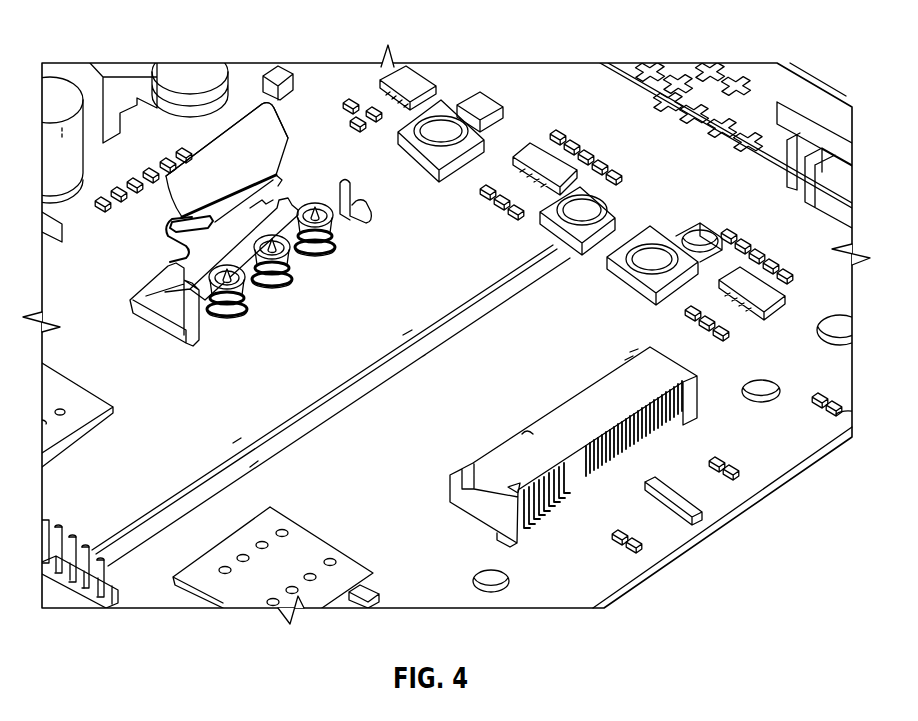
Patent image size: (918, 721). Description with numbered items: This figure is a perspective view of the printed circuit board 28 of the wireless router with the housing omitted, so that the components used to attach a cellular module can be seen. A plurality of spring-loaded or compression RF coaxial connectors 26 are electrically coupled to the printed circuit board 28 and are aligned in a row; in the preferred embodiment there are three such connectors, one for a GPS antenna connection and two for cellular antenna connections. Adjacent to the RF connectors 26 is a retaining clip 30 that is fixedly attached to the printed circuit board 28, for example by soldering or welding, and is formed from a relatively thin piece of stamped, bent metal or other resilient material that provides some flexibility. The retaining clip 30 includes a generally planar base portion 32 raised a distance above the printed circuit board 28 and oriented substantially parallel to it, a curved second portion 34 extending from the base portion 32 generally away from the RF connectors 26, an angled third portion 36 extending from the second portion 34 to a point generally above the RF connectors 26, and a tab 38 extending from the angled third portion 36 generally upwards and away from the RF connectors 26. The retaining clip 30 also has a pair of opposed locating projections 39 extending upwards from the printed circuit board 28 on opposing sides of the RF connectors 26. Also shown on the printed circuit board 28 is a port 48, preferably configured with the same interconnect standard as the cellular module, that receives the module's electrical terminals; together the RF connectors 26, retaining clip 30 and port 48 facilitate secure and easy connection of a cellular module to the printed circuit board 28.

The spring-loaded RF coaxial connectors 26 is at (292, 293).
The printed circuit board 28 is at (534, 90).
The retaining clip 30 is at (265, 126).
The base portion 32 is at (285, 193).
The curved second portion 34 is at (175, 238).
The angled third portion 36 is at (197, 212).
The tab 38 is at (247, 140).
The locating projections 39 is at (342, 178).
The port 48 is at (588, 385).